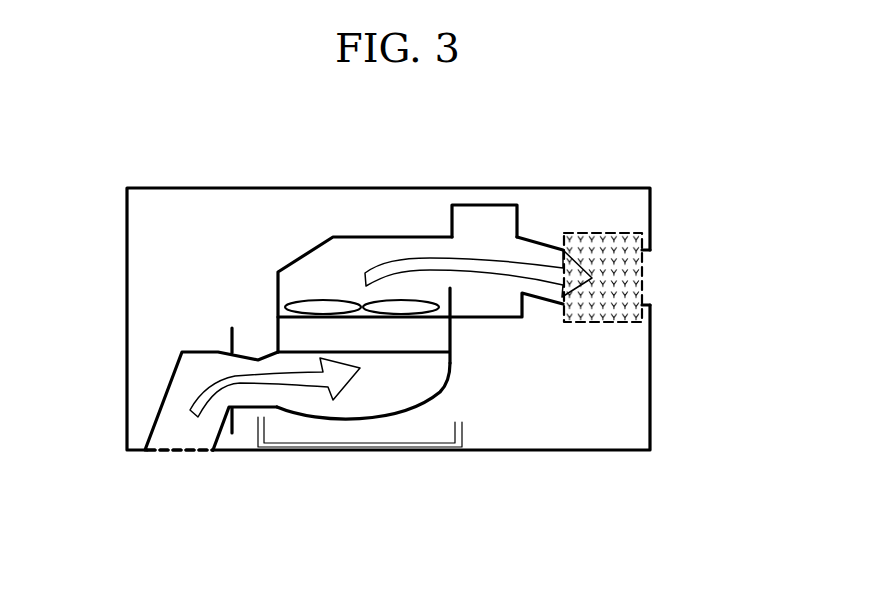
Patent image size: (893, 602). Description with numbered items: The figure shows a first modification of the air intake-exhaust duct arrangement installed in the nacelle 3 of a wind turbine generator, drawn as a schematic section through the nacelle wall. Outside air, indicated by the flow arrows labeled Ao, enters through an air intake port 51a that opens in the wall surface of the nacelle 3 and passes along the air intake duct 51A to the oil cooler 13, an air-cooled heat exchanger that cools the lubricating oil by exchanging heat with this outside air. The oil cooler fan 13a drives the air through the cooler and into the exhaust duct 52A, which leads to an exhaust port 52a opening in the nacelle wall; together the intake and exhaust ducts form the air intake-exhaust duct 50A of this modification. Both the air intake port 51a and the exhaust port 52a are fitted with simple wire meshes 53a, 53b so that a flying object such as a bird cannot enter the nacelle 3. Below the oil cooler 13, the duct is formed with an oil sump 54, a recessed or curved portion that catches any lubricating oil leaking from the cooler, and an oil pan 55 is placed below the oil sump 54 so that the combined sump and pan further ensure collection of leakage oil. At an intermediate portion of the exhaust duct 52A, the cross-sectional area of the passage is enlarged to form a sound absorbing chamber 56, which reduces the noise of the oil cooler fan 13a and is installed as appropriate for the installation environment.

The nacelle 3 is at (435, 186).
The exhaust duct 52A is at (350, 236).
The exhaust port 52a is at (648, 272).
The sound absorbing chamber 56 is at (490, 212).
The oil cooler 13 is at (440, 336).
The oil cooler fan 13a is at (291, 302).
The air intake duct 51A is at (170, 381).
The air intake port 51a is at (172, 457).
The wire mesh 53a is at (193, 456).
The wire mesh 53b is at (598, 323).
The oil sump 54 is at (365, 421).
The oil pan 55 is at (465, 435).
The air passage 50A is at (472, 367).
The outside air flow Ao is at (210, 372).